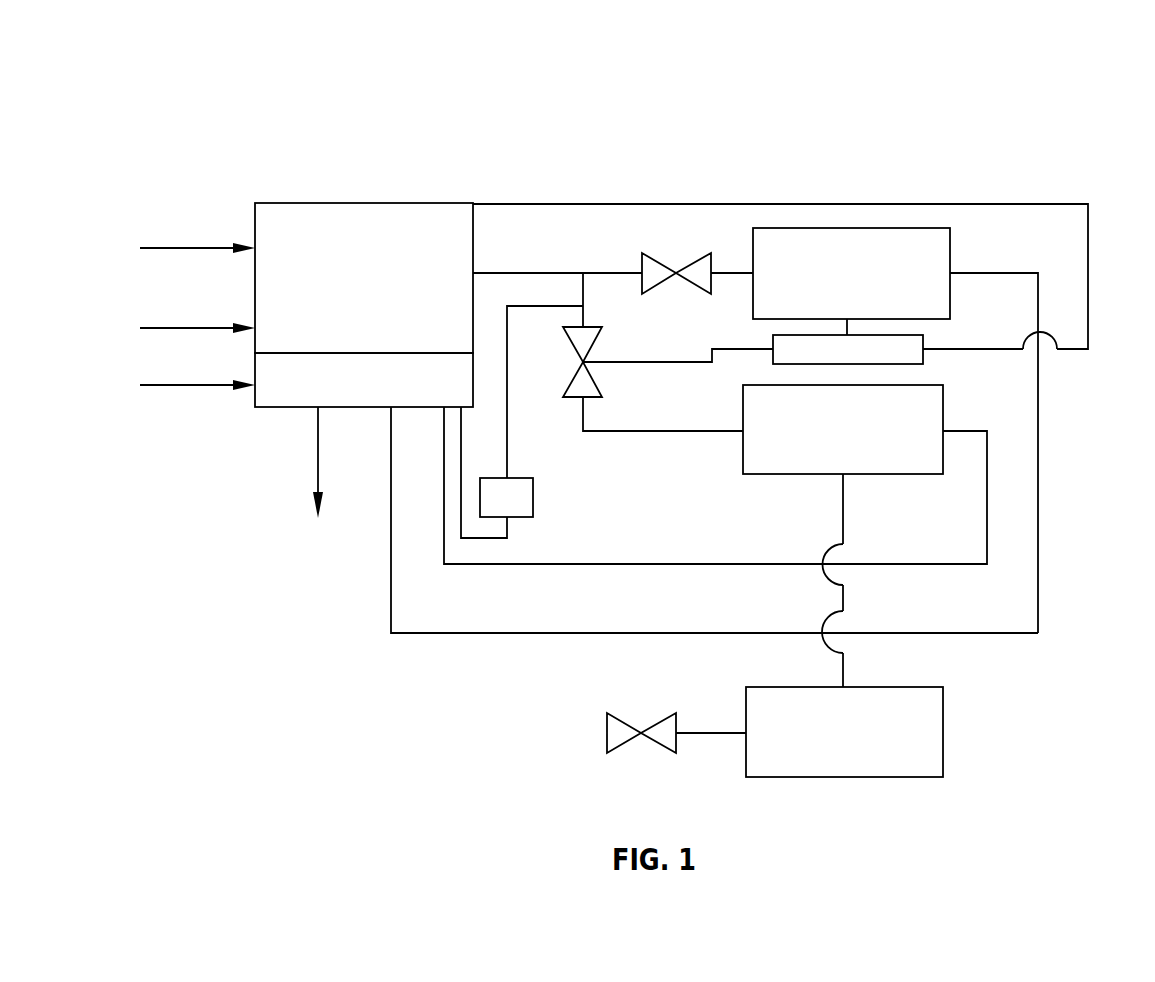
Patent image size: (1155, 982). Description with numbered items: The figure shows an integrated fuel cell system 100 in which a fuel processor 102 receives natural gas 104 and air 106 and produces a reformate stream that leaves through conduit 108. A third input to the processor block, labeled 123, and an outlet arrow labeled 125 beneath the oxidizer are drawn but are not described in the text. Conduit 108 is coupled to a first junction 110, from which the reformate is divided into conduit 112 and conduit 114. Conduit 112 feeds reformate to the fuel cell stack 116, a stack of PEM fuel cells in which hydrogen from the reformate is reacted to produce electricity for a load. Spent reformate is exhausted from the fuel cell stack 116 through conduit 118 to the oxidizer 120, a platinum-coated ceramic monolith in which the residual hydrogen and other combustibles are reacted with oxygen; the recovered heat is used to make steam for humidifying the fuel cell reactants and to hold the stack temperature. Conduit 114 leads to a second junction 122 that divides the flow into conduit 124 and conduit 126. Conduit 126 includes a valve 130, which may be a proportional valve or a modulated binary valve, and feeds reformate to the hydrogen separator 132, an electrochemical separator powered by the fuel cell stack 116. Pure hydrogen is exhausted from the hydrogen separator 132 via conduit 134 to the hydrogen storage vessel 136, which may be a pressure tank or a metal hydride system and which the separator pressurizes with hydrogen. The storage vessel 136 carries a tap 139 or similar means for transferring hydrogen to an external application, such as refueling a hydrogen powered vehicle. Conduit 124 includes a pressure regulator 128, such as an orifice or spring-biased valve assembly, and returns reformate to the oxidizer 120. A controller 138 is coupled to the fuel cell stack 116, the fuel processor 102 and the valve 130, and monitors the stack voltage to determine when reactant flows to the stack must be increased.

The integrated fuel cell system 100 is at (1036, 83).
The fuel processor 102 is at (364, 278).
The natural gas 104 is at (197, 237).
The air 106 is at (197, 317).
The conduit 108 is at (533, 218).
The first junction 110 is at (780, 262).
The conduit 112 is at (681, 286).
The conduit 114 is at (620, 274).
The fuel cell stack 116 is at (851, 281).
The conduit 118 is at (1007, 429).
The oxidizer 120 is at (364, 380).
The second junction 122 is at (632, 330).
The air feed 123 is at (197, 374).
The conduit 124 is at (550, 314).
The exhaust outlet 125 is at (317, 478).
The conduit 126 is at (634, 423).
The pressure regulator 128 is at (539, 472).
The valve 130 is at (644, 362).
The hydrogen separator 132 is at (715, 474).
The conduit 134 is at (762, 547).
The hydrogen storage vessel 136 is at (844, 732).
The controller 138 is at (848, 349).
The tap 139 is at (627, 744).